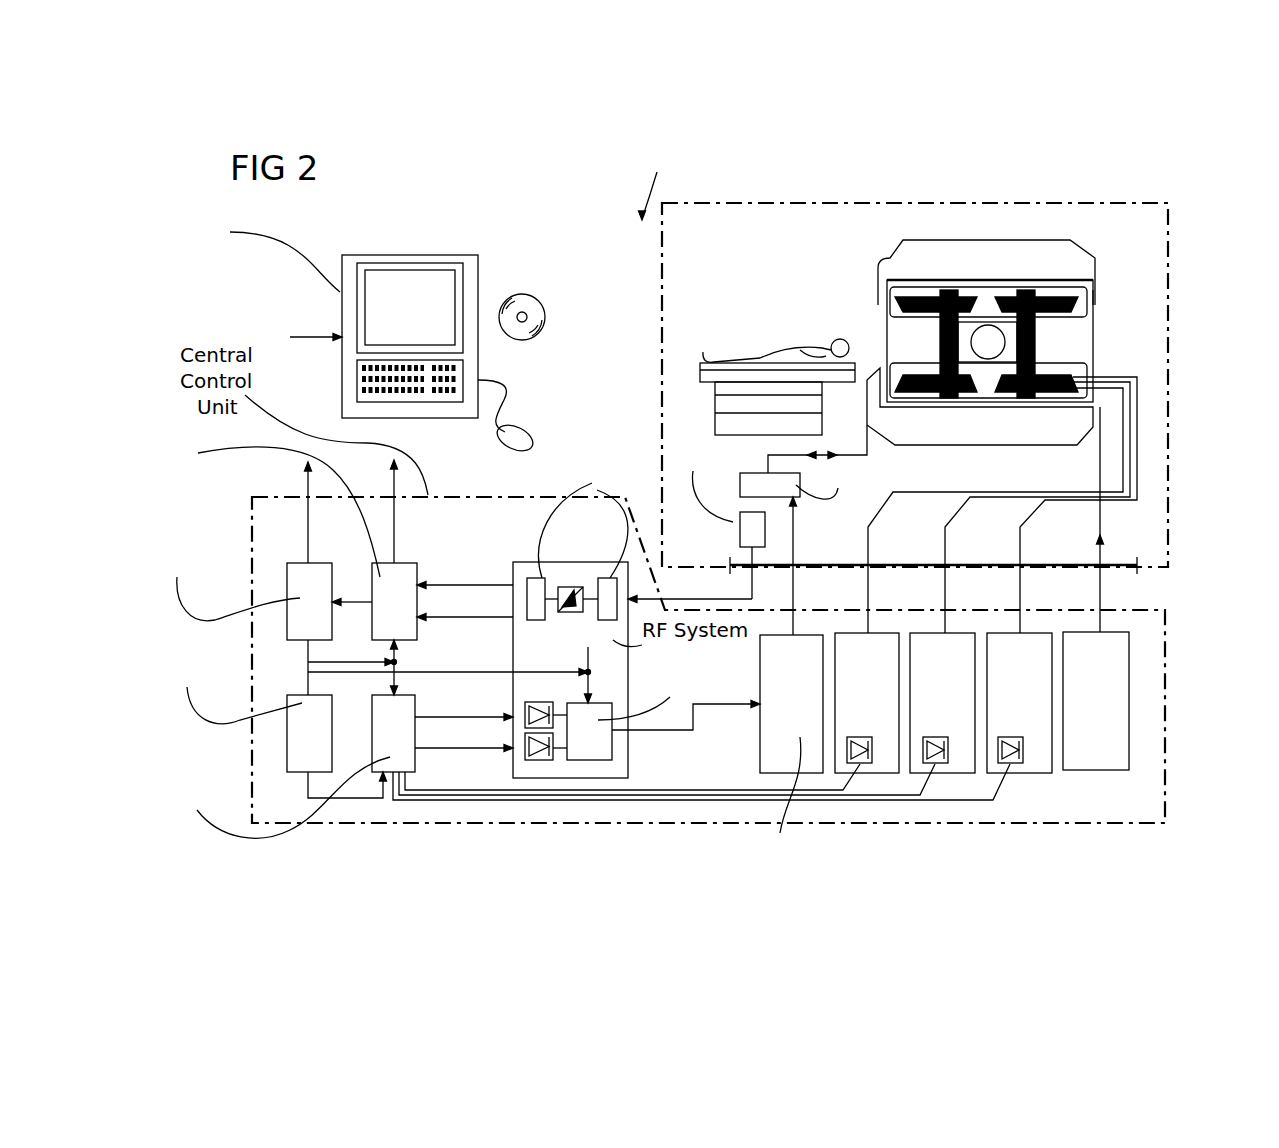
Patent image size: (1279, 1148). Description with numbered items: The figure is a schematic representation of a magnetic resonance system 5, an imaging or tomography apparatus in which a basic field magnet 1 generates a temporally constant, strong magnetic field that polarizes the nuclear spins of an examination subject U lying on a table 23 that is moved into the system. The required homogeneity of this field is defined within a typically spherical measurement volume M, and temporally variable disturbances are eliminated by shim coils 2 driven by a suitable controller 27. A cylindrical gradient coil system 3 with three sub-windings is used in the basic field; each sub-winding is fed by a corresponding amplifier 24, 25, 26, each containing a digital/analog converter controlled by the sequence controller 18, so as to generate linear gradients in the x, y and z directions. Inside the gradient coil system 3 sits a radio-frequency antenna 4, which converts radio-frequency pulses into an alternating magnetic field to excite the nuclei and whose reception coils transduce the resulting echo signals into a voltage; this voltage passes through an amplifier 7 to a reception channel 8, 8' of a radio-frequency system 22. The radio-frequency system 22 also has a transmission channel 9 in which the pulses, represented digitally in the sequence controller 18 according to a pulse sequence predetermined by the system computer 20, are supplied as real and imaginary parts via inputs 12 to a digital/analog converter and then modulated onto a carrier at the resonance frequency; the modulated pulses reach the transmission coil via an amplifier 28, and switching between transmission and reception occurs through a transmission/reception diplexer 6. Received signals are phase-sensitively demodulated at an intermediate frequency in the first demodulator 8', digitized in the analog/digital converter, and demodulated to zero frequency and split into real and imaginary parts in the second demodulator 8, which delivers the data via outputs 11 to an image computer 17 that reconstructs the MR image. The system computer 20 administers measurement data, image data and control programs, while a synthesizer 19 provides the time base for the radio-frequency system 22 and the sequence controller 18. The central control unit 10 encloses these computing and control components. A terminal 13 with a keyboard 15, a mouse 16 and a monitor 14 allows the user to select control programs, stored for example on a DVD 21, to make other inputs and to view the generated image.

The basic field magnet 1 is at (1020, 177).
The shim coils 2 is at (1090, 287).
The gradient coil system 3 is at (823, 244).
The radio-frequency antenna 4 is at (800, 298).
The magnetic resonance system 5 is at (615, 244).
The transmission/reception diplexer 6 is at (740, 486).
The amplifier 7 is at (740, 529).
The second demodulator 8 is at (570, 540).
The first demodulator 8' is at (667, 555).
The transmission channel 9 is at (601, 703).
The central control unit 10 is at (463, 497).
The outputs 11 is at (512, 616).
The inputs 12 is at (512, 747).
The terminal 13 is at (460, 255).
The monitor 14 is at (410, 280).
The keyboard 15 is at (360, 378).
The mouse 16 is at (528, 430).
The image computer 17 is at (400, 563).
The sequence controller 18 is at (415, 704).
The synthesizer 19 is at (292, 695).
The system computer 20 is at (311, 563).
The DVD 21 is at (518, 297).
The radio-frequency system 22 is at (573, 562).
The table 23 is at (715, 403).
The gradient amplifier 24 is at (847, 633).
The gradient amplifier 25 is at (927, 633).
The gradient amplifier 26 is at (997, 633).
The controller for the shim coils 27 is at (1082, 762).
The amplifier 28 is at (782, 753).
The measurement volume M is at (1033, 342).
The examination subject U is at (788, 345).